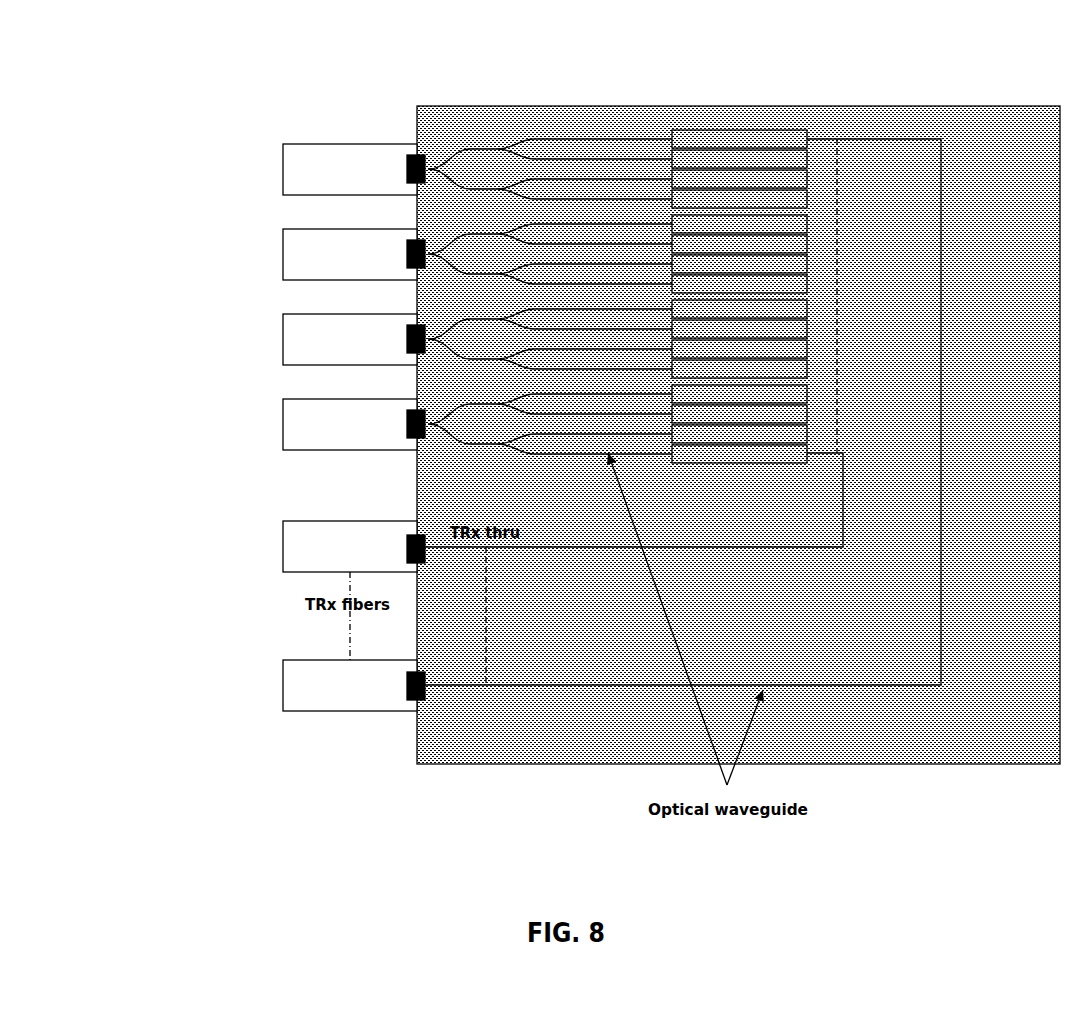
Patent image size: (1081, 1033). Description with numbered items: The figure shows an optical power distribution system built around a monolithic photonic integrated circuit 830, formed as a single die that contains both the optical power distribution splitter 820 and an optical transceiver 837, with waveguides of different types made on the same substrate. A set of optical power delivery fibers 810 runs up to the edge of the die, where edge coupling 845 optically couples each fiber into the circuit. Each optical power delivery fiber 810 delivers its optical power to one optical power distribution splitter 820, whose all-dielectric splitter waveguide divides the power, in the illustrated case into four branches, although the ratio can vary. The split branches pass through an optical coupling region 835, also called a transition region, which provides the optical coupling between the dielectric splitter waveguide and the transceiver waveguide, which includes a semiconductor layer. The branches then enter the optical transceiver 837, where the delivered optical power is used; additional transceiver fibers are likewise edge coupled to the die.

The optical power delivery fiber 810 is at (282, 418).
The optical power distribution splitter 820 is at (517, 138).
The monolithic photonic integrated circuit 830 is at (738, 435).
The optical coupling region 835 is at (613, 138).
The optical transceiver 837 is at (800, 101).
The edge coupling 845 is at (417, 766).